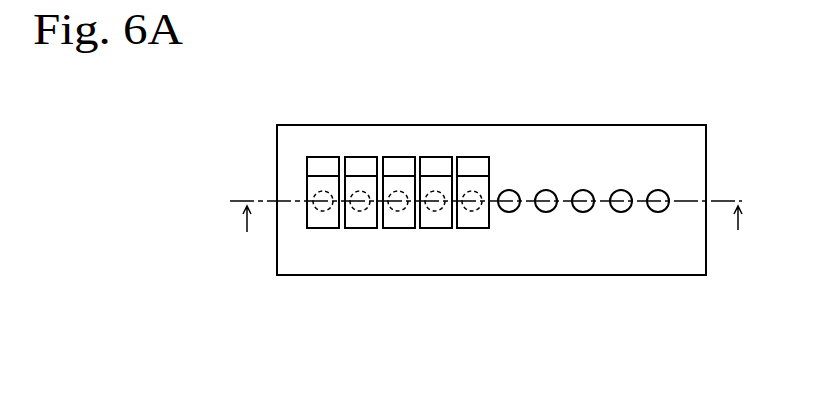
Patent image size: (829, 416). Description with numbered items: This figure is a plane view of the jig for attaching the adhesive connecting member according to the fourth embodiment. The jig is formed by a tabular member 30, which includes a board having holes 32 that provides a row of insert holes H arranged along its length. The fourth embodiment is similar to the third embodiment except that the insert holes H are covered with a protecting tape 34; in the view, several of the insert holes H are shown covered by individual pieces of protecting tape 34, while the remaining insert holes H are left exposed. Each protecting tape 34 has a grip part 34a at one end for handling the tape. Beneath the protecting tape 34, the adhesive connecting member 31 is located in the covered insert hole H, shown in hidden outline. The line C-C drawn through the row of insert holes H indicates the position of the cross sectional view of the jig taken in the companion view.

The tabular member 30 is at (636, 303).
The adhesive connecting member 31 is at (430, 196).
The board having holes 32 is at (335, 262).
The protecting tape 34 is at (310, 185).
The grip part of the protecting tape 34a is at (325, 166).
The insert hole H is at (620, 190).
The line C- C is at (487, 212).